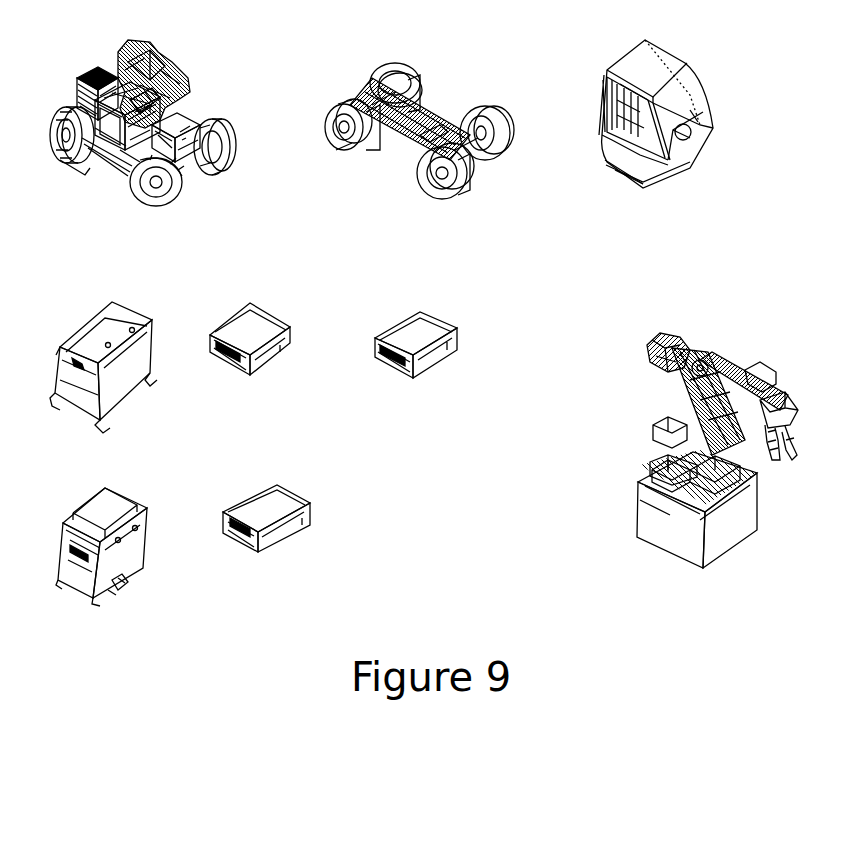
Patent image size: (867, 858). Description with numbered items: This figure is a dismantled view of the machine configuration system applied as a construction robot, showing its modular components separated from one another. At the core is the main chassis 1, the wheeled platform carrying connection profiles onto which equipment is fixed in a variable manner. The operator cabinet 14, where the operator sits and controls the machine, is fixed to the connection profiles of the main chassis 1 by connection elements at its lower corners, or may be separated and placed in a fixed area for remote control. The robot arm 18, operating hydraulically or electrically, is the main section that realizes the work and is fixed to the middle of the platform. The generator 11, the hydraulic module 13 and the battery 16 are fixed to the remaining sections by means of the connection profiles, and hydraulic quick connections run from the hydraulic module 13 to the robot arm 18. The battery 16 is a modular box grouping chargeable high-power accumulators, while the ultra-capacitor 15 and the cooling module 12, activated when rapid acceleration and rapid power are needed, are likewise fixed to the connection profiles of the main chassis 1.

The main chassis 1 is at (390, 155).
The generator 11 is at (112, 318).
The cooling module 12 is at (248, 318).
The hydraulic module 13 is at (104, 510).
The operator cabinet 14 is at (608, 185).
The ultra-capacitor 15 is at (412, 330).
The battery 16 is at (260, 505).
The robot arm 18 is at (635, 420).